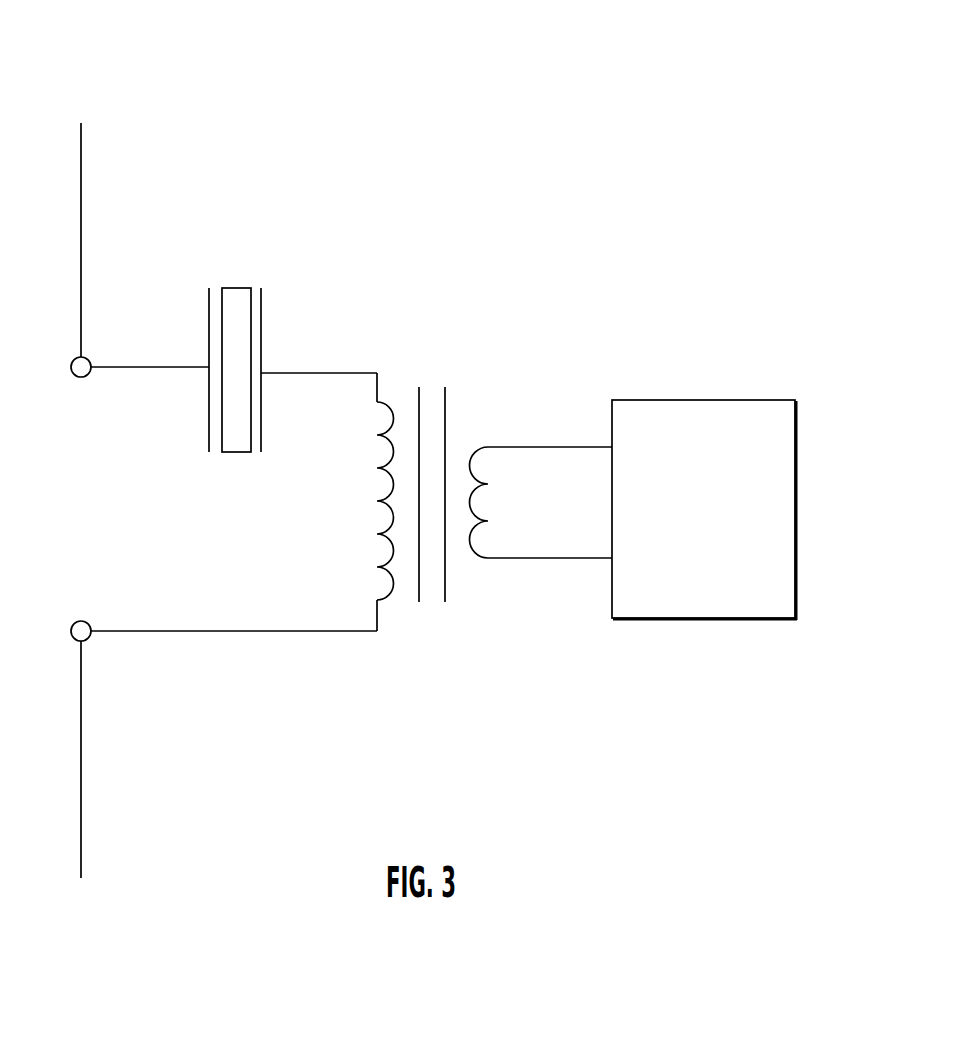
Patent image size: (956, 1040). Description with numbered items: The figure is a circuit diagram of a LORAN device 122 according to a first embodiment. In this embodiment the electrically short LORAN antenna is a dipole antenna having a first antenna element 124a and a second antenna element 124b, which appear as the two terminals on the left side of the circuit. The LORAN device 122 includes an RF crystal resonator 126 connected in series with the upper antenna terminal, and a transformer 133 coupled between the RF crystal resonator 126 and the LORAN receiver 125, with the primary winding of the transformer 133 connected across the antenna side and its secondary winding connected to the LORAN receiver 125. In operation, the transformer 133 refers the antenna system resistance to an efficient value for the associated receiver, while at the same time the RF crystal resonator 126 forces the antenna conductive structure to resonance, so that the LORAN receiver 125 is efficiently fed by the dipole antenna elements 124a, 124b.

The LORAN device 122 is at (495, 106).
The first antenna element 124a is at (81, 195).
The second antenna element 124b is at (81, 793).
The RF crystal resonator 126 is at (253, 308).
The transformer 133 is at (445, 418).
The LORAN receiver 125 is at (768, 437).